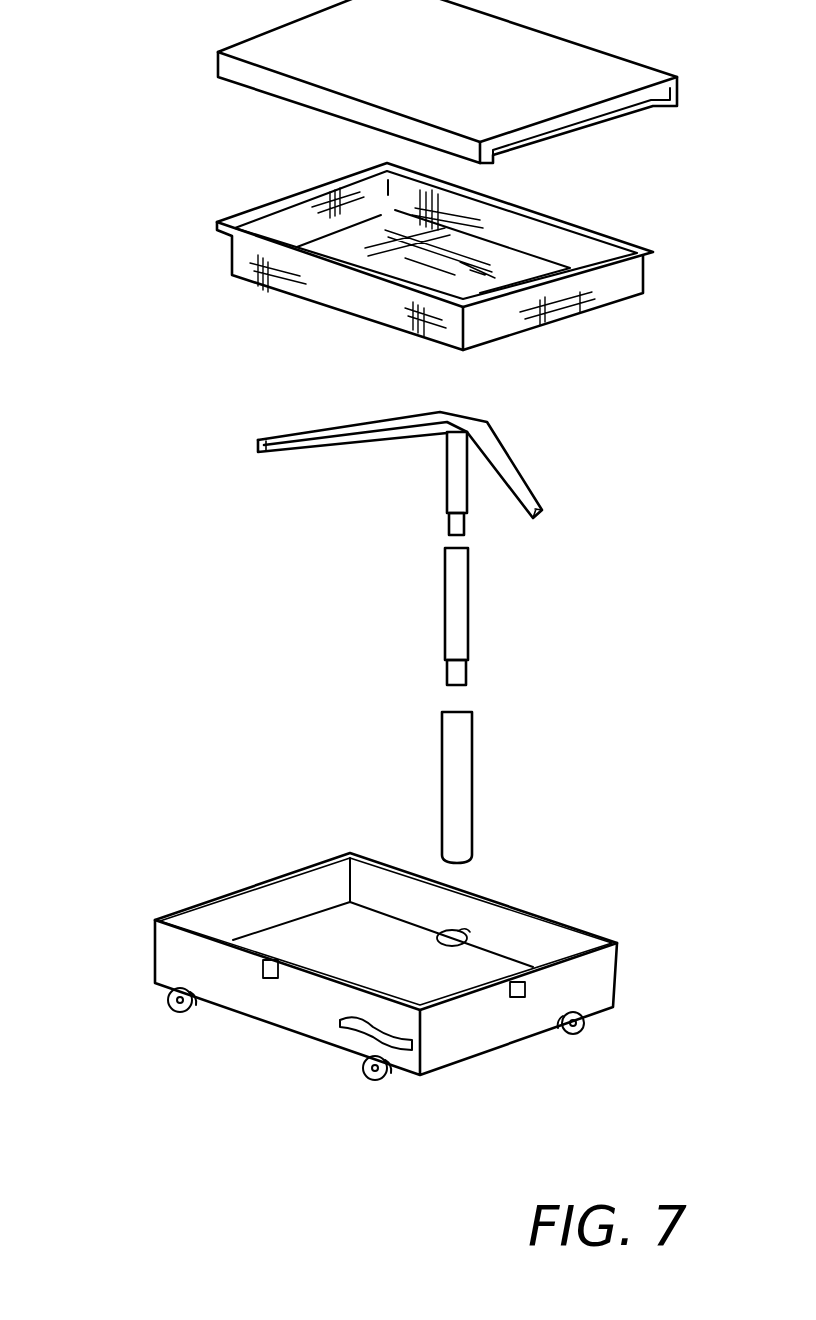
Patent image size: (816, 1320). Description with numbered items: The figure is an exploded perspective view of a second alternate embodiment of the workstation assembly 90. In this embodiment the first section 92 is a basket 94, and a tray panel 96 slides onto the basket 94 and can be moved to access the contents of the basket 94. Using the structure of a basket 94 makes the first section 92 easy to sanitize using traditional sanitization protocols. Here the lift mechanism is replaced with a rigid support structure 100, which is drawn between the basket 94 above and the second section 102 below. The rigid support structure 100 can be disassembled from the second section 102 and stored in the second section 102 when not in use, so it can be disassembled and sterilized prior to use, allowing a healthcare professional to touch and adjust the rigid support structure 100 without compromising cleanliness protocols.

The workstation assembly 90 is at (133, 118).
The first section 92 is at (486, 281).
The basket 94 is at (557, 325).
The tray panel 96 is at (610, 75).
The rigid support structure 100 is at (537, 853).
The second section 102 is at (640, 947).